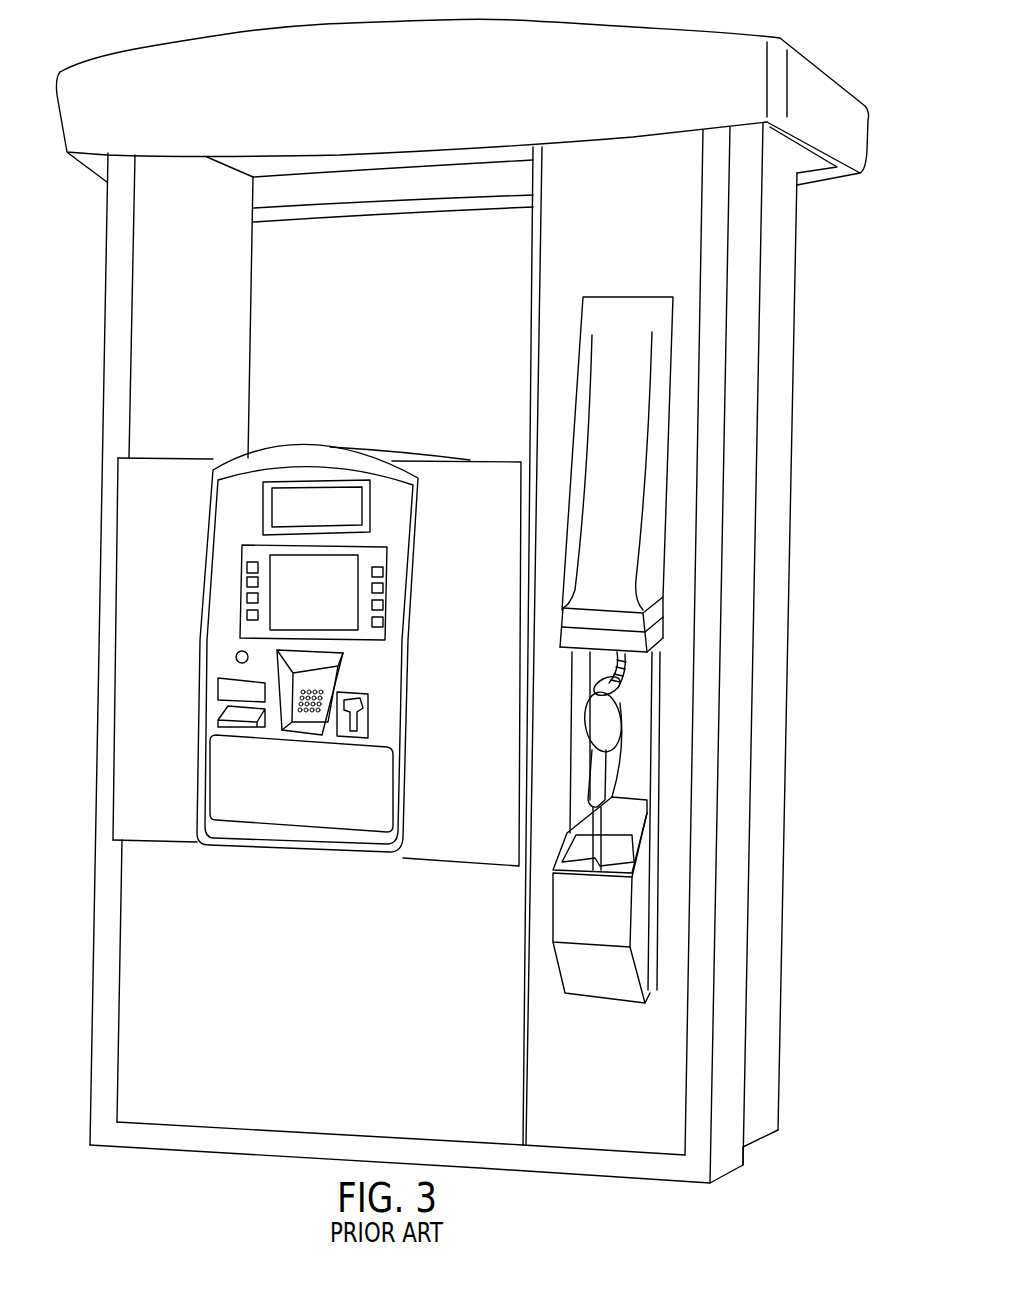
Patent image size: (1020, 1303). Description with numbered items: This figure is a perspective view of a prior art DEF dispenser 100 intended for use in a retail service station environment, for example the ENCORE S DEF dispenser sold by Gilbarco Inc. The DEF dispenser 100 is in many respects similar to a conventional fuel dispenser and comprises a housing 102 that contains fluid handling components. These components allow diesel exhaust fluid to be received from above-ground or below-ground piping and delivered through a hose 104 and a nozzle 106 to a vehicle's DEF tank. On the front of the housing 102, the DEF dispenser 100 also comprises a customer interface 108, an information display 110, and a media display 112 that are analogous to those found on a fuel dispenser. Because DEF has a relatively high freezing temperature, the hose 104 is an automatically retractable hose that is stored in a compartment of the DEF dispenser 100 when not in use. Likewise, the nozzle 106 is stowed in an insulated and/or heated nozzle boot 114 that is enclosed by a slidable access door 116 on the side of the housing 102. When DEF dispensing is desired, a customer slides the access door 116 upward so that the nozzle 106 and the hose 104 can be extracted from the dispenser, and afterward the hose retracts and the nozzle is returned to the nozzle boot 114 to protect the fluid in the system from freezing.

The DEF dispenser 100 is at (815, 39).
The housing 102 is at (794, 330).
The hose 104 is at (597, 850).
The nozzle 106 is at (627, 695).
The customer interface 108 is at (298, 444).
The information display 110 is at (330, 480).
The media display 112 is at (352, 566).
The nozzle boot 114 is at (657, 700).
The slidable access door 116 is at (657, 467).